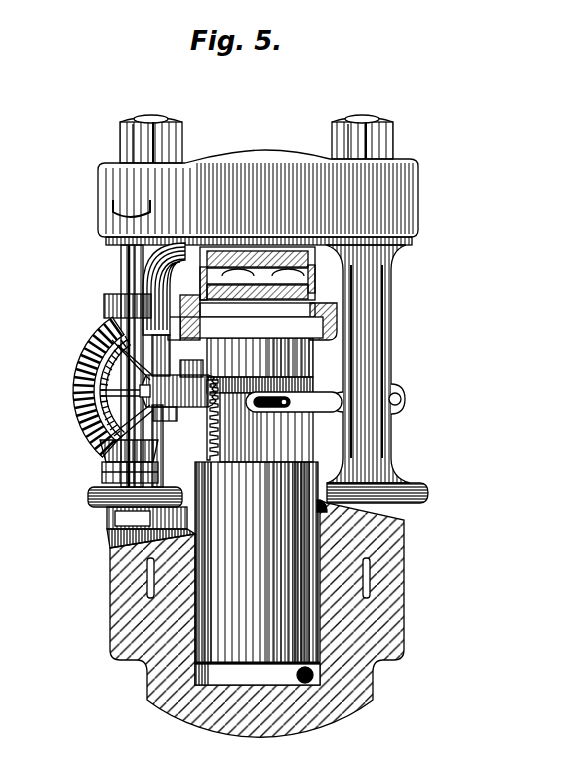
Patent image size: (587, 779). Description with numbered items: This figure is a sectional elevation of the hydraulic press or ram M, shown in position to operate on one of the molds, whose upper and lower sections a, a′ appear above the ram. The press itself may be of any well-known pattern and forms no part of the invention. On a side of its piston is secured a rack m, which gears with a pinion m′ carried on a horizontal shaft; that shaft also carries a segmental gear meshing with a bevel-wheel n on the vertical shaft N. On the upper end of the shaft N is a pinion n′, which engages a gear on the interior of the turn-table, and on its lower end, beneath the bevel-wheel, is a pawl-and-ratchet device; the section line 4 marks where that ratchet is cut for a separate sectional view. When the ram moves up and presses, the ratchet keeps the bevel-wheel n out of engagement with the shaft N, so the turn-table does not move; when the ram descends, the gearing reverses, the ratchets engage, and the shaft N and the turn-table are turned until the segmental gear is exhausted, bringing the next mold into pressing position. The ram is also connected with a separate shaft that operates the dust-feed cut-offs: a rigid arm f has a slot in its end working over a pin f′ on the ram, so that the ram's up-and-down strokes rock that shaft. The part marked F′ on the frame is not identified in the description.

The vertical shaft N is at (131, 260).
The bevel-wheel n is at (100, 349).
The pinion n′ is at (107, 305).
The section line 4 is at (104, 472).
The pinion m′ is at (193, 372).
The rack m is at (212, 434).
The hydraulic press or ram M is at (428, 551).
The upper section of mold a is at (304, 262).
The lower section of mold a′ is at (315, 280).
The rigid arm f is at (316, 404).
The pin f′ is at (292, 410).
The lug on standard F′ is at (401, 400).